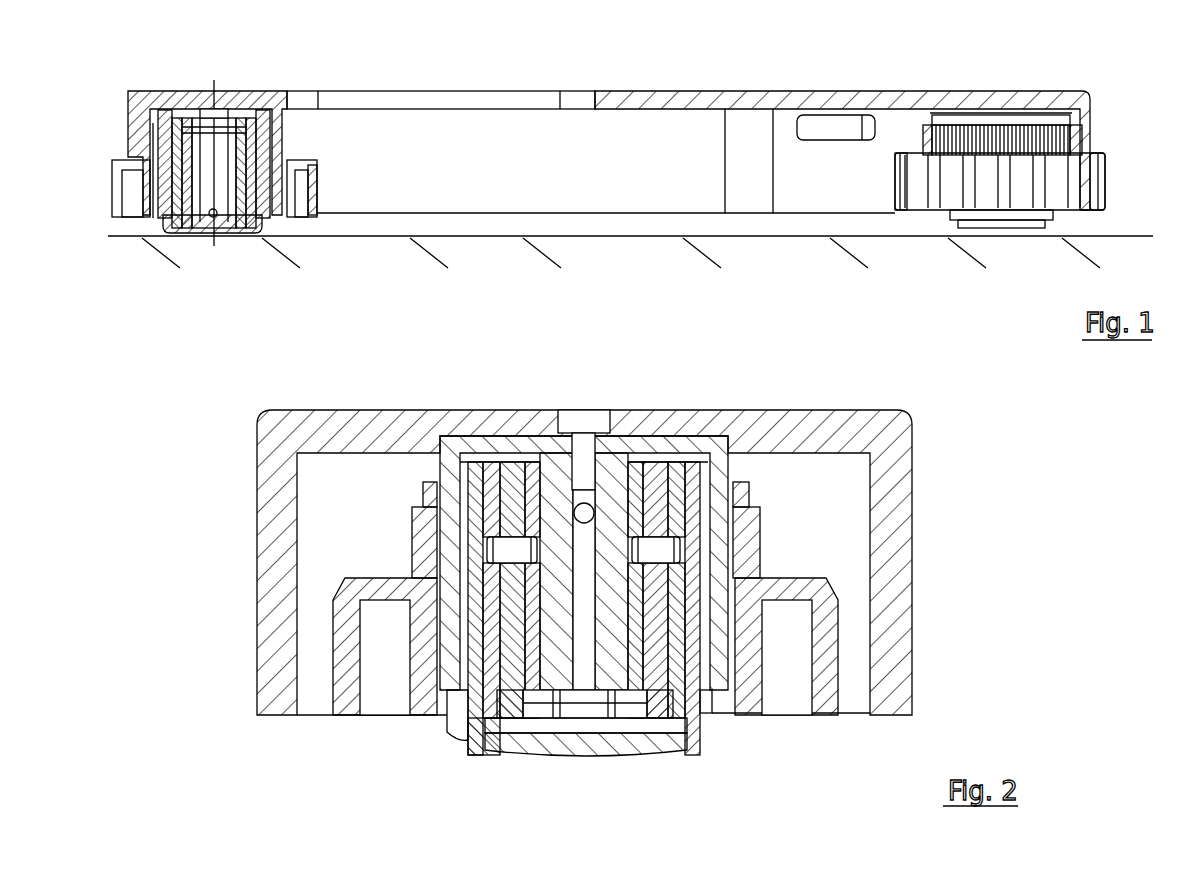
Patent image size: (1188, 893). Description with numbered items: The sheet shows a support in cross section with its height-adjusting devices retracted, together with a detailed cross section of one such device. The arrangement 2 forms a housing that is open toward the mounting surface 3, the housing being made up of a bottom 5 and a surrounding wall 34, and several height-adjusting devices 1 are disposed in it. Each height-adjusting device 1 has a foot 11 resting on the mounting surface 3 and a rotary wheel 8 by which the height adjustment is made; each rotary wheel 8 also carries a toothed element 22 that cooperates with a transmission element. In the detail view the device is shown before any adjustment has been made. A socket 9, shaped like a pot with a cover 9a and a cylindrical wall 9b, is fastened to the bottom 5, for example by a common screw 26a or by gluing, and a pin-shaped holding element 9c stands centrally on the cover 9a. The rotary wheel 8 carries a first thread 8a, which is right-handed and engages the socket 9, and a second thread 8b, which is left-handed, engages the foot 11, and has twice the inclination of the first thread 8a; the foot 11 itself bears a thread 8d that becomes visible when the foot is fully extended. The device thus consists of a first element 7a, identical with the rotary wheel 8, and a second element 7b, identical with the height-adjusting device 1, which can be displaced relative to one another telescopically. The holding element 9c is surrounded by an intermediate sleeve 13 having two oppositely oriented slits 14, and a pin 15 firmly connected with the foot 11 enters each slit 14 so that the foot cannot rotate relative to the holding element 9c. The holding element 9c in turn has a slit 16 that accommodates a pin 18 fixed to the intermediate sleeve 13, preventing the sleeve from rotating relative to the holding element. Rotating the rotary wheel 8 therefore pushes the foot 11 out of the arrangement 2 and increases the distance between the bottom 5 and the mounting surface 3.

In FIG. 1, the height-adjusting device 1 is at (174, 104).
In FIG. 1, the arrangement 2 is at (737, 68).
In FIG. 1, the mounting surface 3 is at (383, 238).
In FIG. 1, the bottom 5 is at (878, 89).
In FIG. 2, the bottom 5 is at (748, 416).
In FIG. 2, the first element 7a is at (418, 620).
In FIG. 2, the second element 7b is at (678, 735).
In FIG. 1, the rotary wheel 8 is at (118, 194).
In FIG. 2, the rotary wheel 8 is at (820, 706).
In FIG. 2, the first thread 8a is at (468, 516).
In FIG. 2, the second thread 8b is at (660, 650).
In FIG. 2, the thread 8d is at (490, 745).
In FIG. 1, the socket 9 is at (221, 98).
In FIG. 2, the socket 9 is at (618, 445).
In FIG. 2, the cover 9a is at (496, 436).
In FIG. 2, the cylindrical wall 9b is at (730, 462).
In FIG. 2, the holding element 9c is at (550, 634).
In FIG. 1, the foot 11 is at (205, 232).
In FIG. 2, the foot 11 is at (654, 752).
In FIG. 2, the intermediate sleeve 13 is at (627, 480).
In FIG. 2, the slit 14 is at (470, 698).
In FIG. 2, the pin 15 is at (512, 537).
In FIG. 2, the slit 16 is at (577, 668).
In FIG. 2, the pin 18 is at (585, 500).
In FIG. 1, the toothed element 22 is at (958, 140).
In FIG. 2, the screw 26a is at (604, 422).
In FIG. 1, the surrounding wall 34 is at (127, 114).